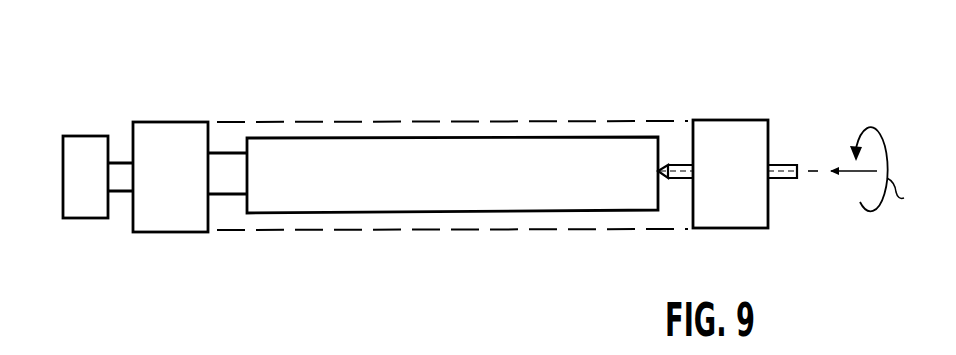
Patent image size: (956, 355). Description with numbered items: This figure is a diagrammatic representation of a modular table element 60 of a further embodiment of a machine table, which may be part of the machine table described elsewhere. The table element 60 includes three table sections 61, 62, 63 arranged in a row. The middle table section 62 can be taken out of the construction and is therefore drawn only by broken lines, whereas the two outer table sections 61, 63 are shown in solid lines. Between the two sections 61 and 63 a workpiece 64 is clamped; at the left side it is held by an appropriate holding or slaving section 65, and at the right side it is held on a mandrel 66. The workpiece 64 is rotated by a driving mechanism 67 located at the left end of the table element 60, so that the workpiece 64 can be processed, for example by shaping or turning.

The table element 60 is at (608, 100).
The table section 61 is at (183, 109).
The table section 62 is at (494, 120).
The table section 63 is at (742, 117).
The workpiece 64 is at (397, 148).
The holding or slaving section 65 is at (228, 167).
The mandrel 66 is at (680, 165).
The driving mechanism 67 is at (86, 146).